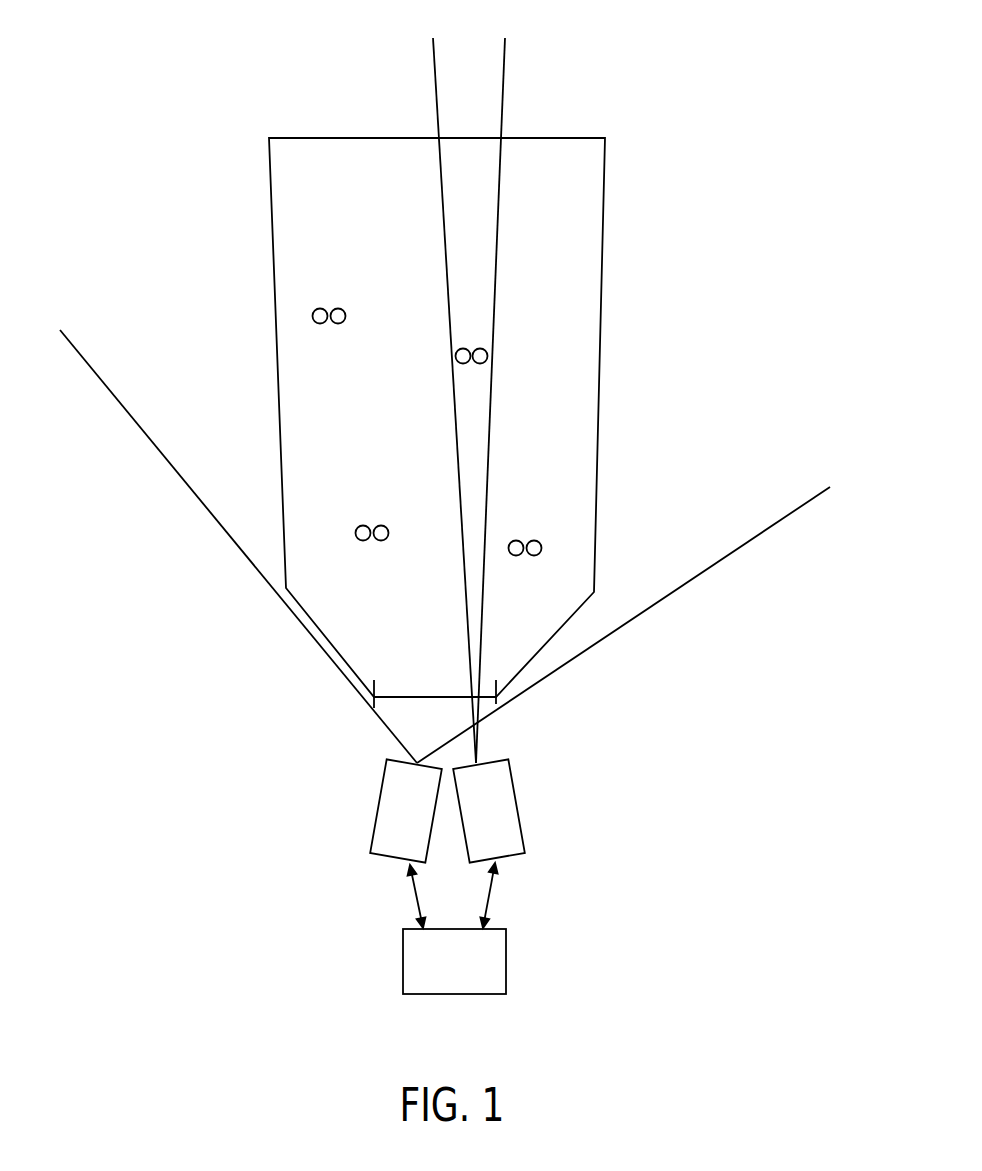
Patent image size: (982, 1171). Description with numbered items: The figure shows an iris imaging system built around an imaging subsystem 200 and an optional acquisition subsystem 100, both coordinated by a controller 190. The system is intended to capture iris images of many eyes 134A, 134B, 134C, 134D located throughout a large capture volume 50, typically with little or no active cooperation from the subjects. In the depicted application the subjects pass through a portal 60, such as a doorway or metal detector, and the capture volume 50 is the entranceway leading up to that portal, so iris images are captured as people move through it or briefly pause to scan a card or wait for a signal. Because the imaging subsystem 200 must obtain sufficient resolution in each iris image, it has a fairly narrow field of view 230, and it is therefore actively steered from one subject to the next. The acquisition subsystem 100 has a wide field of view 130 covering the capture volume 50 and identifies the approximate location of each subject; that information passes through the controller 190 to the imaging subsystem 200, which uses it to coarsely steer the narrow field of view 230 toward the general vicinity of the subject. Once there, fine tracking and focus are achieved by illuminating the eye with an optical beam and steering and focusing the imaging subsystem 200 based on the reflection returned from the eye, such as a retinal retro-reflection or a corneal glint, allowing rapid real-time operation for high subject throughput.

The capture volume 50 is at (603, 258).
The portal 60 is at (402, 700).
The acquisition subsystem 100 is at (387, 823).
The imaging subsystem 200 is at (470, 823).
The controller 190 is at (433, 975).
The wide field of view 130 is at (160, 456).
The narrow field of view 230 is at (507, 79).
The eye 134A is at (325, 300).
The eye 134B is at (472, 343).
The eye 134C is at (371, 521).
The eye 134D is at (526, 540).